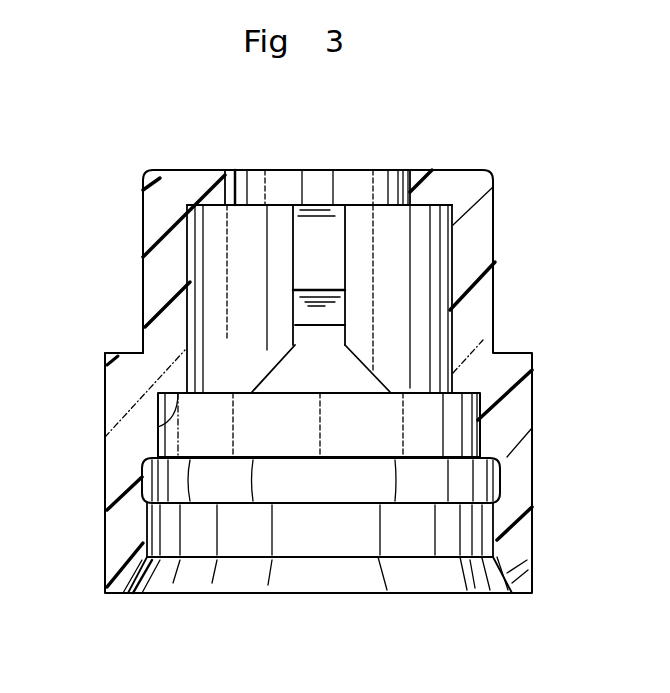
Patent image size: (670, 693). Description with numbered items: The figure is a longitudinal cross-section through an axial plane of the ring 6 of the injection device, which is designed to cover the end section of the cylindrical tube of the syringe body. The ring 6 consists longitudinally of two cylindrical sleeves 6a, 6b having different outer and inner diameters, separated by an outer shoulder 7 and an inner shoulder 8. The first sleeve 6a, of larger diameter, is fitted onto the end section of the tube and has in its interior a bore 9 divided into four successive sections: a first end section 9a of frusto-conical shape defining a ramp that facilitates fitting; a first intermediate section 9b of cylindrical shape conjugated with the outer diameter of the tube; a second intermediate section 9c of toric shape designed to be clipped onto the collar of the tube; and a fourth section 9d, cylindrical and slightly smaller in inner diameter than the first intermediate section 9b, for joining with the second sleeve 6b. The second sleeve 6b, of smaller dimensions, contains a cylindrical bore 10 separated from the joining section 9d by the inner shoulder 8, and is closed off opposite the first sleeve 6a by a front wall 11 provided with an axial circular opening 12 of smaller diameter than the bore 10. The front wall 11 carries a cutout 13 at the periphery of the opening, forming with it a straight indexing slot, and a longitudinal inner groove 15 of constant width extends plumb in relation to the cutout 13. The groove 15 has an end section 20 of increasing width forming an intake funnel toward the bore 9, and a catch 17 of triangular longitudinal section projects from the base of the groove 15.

The ring 6 is at (538, 348).
The first sleeve 6a is at (522, 483).
The second sleeve 6b is at (481, 307).
The outer shoulder 7 is at (130, 353).
The inner shoulder 8 is at (175, 410).
The bore 9 is at (332, 510).
The first end section 9a is at (236, 567).
The first intermediate section 9b is at (413, 538).
The second intermediate section 9c is at (143, 565).
The fourth section 9d is at (468, 418).
The cylindrical bore 10 is at (415, 262).
The front wall 11 is at (437, 188).
The axial circular opening 12 is at (358, 181).
The cutout 13 is at (314, 178).
The longitudinal inner groove 15 is at (333, 243).
The catch 17 is at (308, 308).
The end section 20 is at (300, 373).